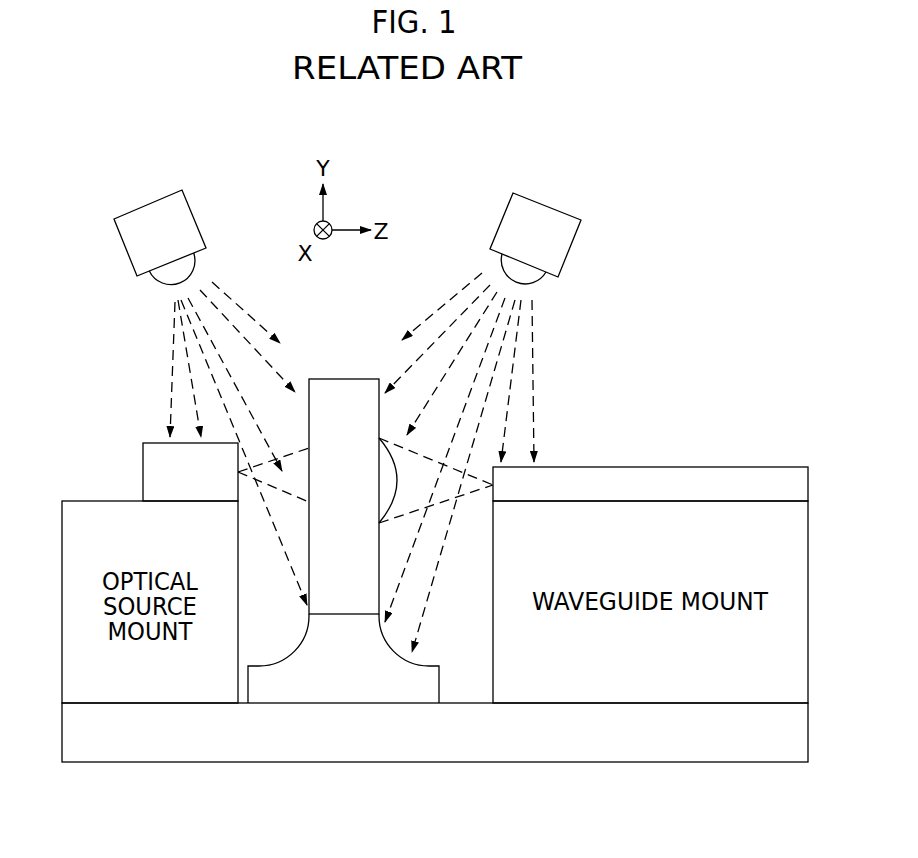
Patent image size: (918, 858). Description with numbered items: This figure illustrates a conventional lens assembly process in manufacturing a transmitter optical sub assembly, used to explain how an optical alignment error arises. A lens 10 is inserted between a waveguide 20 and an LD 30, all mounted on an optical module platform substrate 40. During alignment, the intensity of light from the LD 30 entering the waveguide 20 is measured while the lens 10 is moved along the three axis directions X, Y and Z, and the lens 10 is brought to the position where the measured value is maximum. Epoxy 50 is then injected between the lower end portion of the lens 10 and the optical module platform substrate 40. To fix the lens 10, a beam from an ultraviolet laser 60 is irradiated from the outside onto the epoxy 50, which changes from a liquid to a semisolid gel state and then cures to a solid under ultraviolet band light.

The lens 10 is at (345, 379).
The waveguide 20 is at (652, 467).
The LD 30 is at (156, 443).
The optical module platform substrate 40 is at (428, 763).
The epoxy 50 is at (293, 650).
The UV laser 60 is at (145, 206).